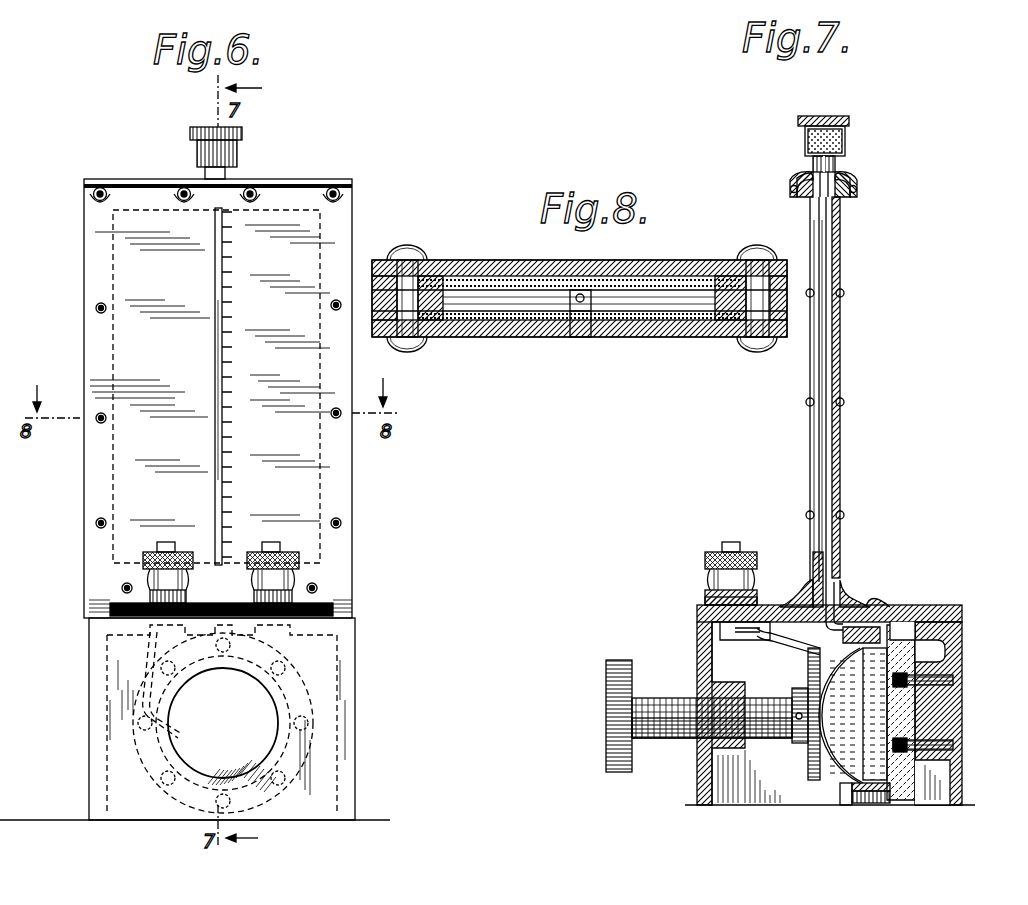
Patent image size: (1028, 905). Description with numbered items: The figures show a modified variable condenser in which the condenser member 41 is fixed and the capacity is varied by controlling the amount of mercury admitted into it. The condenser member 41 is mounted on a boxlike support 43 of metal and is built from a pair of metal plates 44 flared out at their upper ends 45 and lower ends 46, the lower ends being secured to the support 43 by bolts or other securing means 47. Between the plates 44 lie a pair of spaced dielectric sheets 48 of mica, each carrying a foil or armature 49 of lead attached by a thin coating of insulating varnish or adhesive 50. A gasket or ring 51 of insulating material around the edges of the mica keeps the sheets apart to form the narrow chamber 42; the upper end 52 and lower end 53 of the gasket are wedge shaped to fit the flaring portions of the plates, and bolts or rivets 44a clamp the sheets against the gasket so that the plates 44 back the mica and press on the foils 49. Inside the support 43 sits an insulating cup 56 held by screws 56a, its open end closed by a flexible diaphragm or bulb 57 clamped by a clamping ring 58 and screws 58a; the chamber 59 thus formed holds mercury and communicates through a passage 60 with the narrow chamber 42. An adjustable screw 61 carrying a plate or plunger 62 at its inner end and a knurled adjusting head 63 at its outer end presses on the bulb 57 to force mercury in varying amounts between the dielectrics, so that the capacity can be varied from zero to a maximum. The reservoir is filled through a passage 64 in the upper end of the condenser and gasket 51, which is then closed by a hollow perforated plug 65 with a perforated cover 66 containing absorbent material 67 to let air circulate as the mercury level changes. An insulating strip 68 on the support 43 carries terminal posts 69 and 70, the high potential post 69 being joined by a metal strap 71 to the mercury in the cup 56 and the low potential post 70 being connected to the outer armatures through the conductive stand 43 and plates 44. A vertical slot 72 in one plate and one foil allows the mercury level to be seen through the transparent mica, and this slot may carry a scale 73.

In FIG. 7, the condenser member 41 is at (840, 350).
In FIG. 8, the narrow space or chamber 42 is at (470, 300).
In FIG. 7, the narrow space or chamber 42 is at (826, 318).
In FIG. 6, the boxlike support 43 is at (355, 668).
In FIG. 7, the boxlike support 43 is at (958, 612).
In FIG. 6, the metal plates 44 is at (352, 470).
In FIG. 8, the metal plates 44 is at (520, 260).
In FIG. 7, the metal plates 44 is at (813, 565).
In FIG. 6, the bolts or rivets 44a is at (385, 516).
In FIG. 8, the bolts or rivets 44a is at (757, 355).
In FIG. 7, the bolts or rivets 44a is at (866, 496).
In FIG. 7, the upper ends of plates 45 is at (793, 178).
In FIG. 7, the lower ends of plates 46 is at (795, 598).
In FIG. 7, the bolts or securing means 47 is at (885, 598).
In FIG. 8, the dielectric sheets 48 is at (645, 292).
In FIG. 8, the foil or armature 49 is at (680, 282).
In FIG. 8, the insulating varnish or adhesive 50 is at (715, 282).
In FIG. 8, the gasket or ring 51 is at (435, 300).
In FIG. 7, the gasket or ring 51 is at (820, 485).
In FIG. 7, the upper end of gasket 52 is at (845, 165).
In FIG. 7, the lower end of gasket 53 is at (845, 600).
In FIG. 7, the insulating cup 56 is at (920, 680).
In FIG. 7, the screws 56a is at (953, 745).
In FIG. 7, the flexible diaphragm or bulb 57 is at (838, 765).
In FIG. 7, the clamping ring 58 is at (877, 760).
In FIG. 7, the screws 58a is at (848, 800).
In FIG. 7, the space or chamber 59 is at (880, 800).
In FIG. 8, the passage 60 is at (582, 294).
In FIG. 7, the passage 60 is at (855, 627).
In FIG. 7, the adjustable screw 61 is at (670, 738).
In FIG. 7, the plate or plunger 62 is at (808, 765).
In FIG. 6, the knurled adjusting head 63 is at (268, 737).
In FIG. 7, the knurled adjusting head 63 is at (606, 745).
In FIG. 7, the filling passage 64 is at (838, 190).
In FIG. 6, the plug 65 is at (237, 155).
In FIG. 7, the plug 65 is at (805, 138).
In FIG. 6, the perforated cover 66 is at (242, 132).
In FIG. 7, the perforated cover 66 is at (826, 116).
In FIG. 7, the absorbent material 67 is at (838, 128).
In FIG. 6, the insulating strip 68 is at (340, 598).
In FIG. 7, the insulating strip 68 is at (705, 600).
In FIG. 6, the terminal post 69 is at (150, 550).
In FIG. 7, the terminal post 69 is at (712, 550).
In FIG. 6, the terminal post 70 is at (258, 550).
In FIG. 6, the metal strap 71 is at (138, 650).
In FIG. 7, the metal strap 71 is at (777, 650).
In FIG. 6, the vertical slot 72 is at (226, 418).
In FIG. 8, the vertical slot 72 is at (580, 337).
In FIG. 7, the vertical slot 72 is at (812, 440).
In FIG. 6, the scale 73 is at (226, 357).